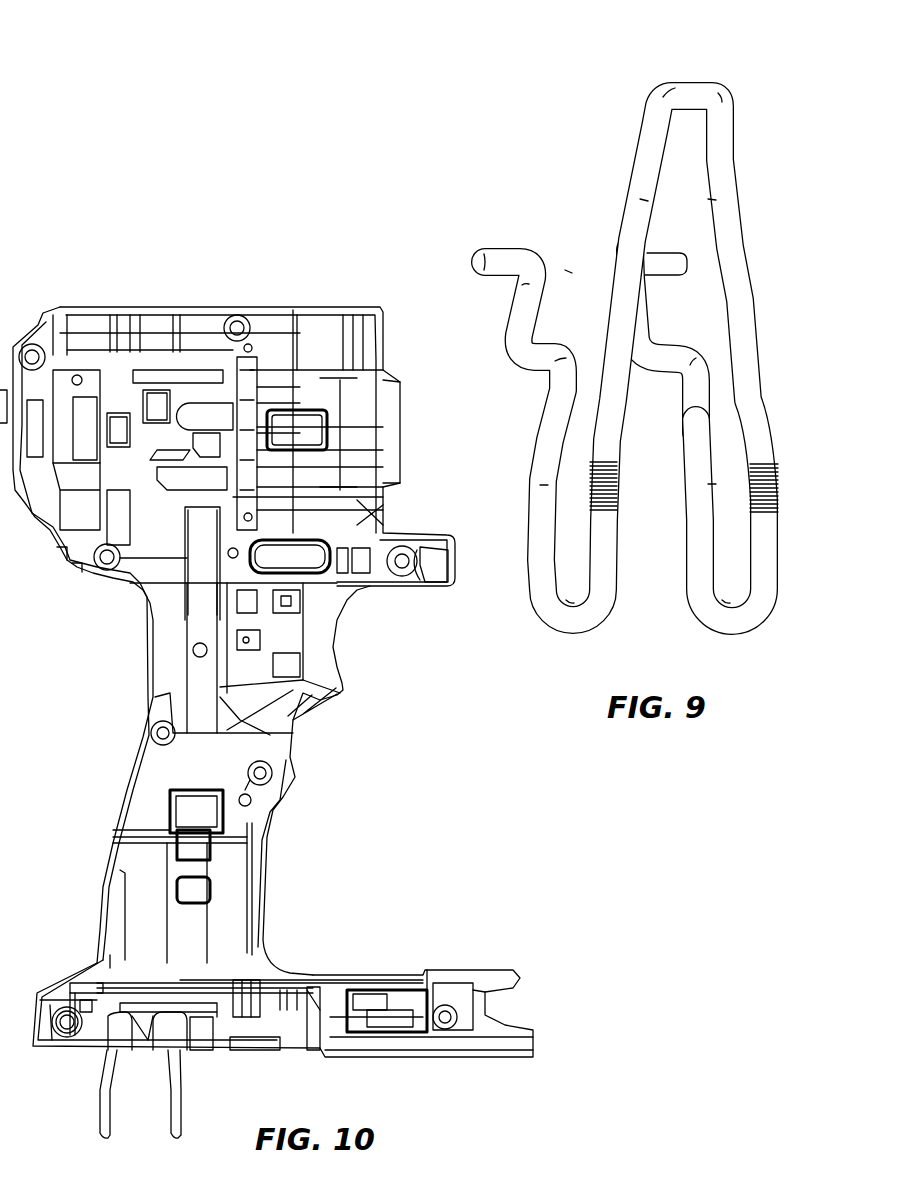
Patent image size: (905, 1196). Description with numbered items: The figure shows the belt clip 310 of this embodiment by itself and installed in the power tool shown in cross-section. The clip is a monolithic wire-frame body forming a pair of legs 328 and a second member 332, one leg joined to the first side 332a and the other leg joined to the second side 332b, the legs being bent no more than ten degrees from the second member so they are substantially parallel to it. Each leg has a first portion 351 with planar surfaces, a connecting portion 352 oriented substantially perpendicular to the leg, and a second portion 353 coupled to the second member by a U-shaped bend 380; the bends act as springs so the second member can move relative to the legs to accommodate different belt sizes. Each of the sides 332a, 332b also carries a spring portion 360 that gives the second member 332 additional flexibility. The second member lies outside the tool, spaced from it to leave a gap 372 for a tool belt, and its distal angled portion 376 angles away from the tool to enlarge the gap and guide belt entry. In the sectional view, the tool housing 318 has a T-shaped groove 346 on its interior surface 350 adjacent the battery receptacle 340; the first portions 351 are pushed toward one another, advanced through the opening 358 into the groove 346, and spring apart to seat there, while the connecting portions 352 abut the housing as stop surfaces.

In FIG. 9, the belt clip 310 is at (584, 145).
In FIG. 10, the belt clip 310 is at (102, 1117).
In FIG. 10, the tool housing 318 is at (227, 641).
In FIG. 9, the pair of legs 328 is at (520, 528).
In FIG. 9, the second member 332 is at (737, 307).
In FIG. 9, the first side of the second member 332a is at (632, 237).
In FIG. 9, the second side of the second member 332b is at (735, 247).
In FIG. 10, the battery receptacle 340 is at (357, 1075).
In FIG. 10, the groove 346 is at (127, 1013).
In FIG. 10, the interior surface 350 is at (460, 1058).
In FIG. 9, the first portion 351 is at (503, 253).
In FIG. 9, the connecting portion 352 is at (541, 348).
In FIG. 9, the second portion 353 is at (534, 478).
In FIG. 10, the opening 358 is at (150, 1040).
In FIG. 9, the spring portion 360 is at (610, 473).
In FIG. 9, the gap 372 is at (576, 586).
In FIG. 9, the angled portion 376 is at (690, 83).
In FIG. 9, the bend 380 is at (566, 618).